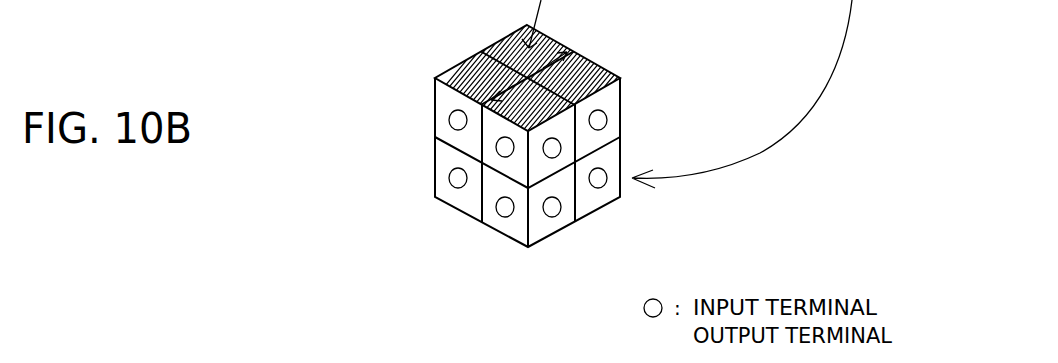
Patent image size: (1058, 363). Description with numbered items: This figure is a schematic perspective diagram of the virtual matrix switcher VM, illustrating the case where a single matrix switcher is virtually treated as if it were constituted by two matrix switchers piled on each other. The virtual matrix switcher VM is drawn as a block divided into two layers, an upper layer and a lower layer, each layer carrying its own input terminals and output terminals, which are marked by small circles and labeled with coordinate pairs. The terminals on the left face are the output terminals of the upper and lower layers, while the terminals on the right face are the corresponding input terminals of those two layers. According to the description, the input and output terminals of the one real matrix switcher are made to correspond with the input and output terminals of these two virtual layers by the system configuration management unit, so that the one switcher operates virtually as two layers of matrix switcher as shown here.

The virtual matrix switcher VM is at (354, 36).